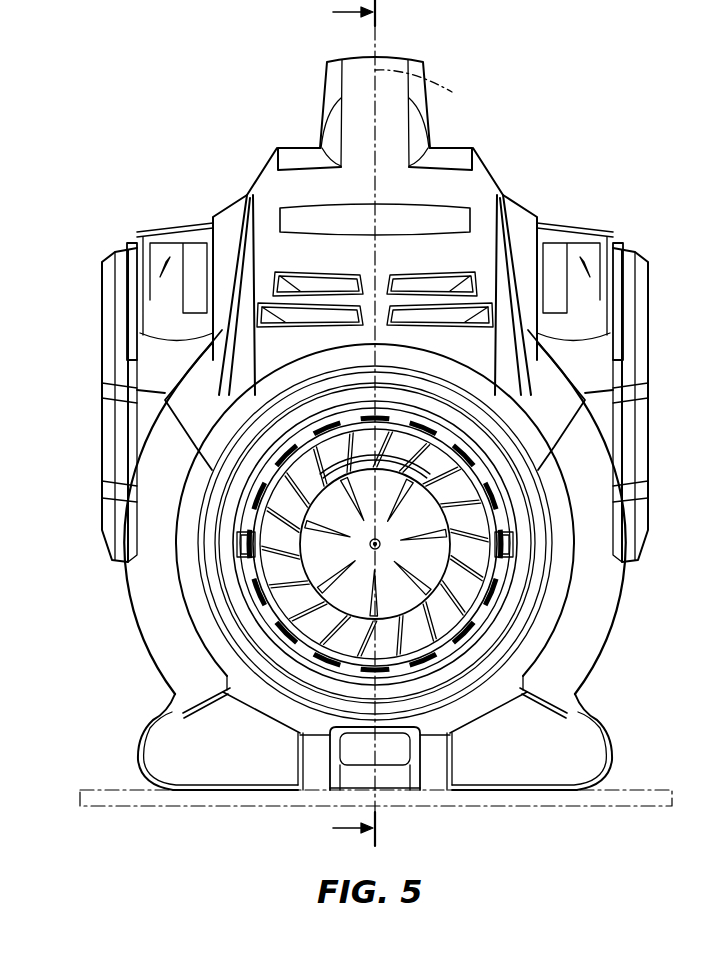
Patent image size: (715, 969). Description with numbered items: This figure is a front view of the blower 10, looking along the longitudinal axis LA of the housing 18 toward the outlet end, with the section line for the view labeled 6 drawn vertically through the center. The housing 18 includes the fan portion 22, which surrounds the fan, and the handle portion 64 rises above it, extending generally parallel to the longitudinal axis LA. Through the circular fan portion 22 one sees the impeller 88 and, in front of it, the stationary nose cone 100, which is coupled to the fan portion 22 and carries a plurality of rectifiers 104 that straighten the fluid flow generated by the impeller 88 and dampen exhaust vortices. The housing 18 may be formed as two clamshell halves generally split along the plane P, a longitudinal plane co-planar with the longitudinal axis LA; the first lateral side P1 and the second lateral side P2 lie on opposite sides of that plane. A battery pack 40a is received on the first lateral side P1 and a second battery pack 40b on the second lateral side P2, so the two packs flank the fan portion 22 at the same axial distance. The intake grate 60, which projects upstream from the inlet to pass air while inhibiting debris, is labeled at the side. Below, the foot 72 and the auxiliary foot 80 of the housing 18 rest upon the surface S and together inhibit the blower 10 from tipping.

The blower 10 is at (608, 167).
The housing 18 is at (298, 215).
The fan portion 22 is at (425, 345).
The battery pack 40a is at (112, 352).
The battery pack 40b is at (640, 343).
The intake grate 60 is at (17, 622).
The handle portion 64 is at (330, 120).
The foot 72 is at (592, 743).
The auxiliary foot 80 is at (333, 790).
The impeller 88 is at (415, 433).
The nose cone 100 is at (417, 560).
The rectifiers 104 is at (440, 638).
The section line 6 is at (343, 423).
The longitudinal axis LA is at (378, 544).
The plane P is at (421, 90).
The first lateral side P1 is at (352, 46).
The second lateral side P2 is at (398, 46).
The surface S is at (617, 800).